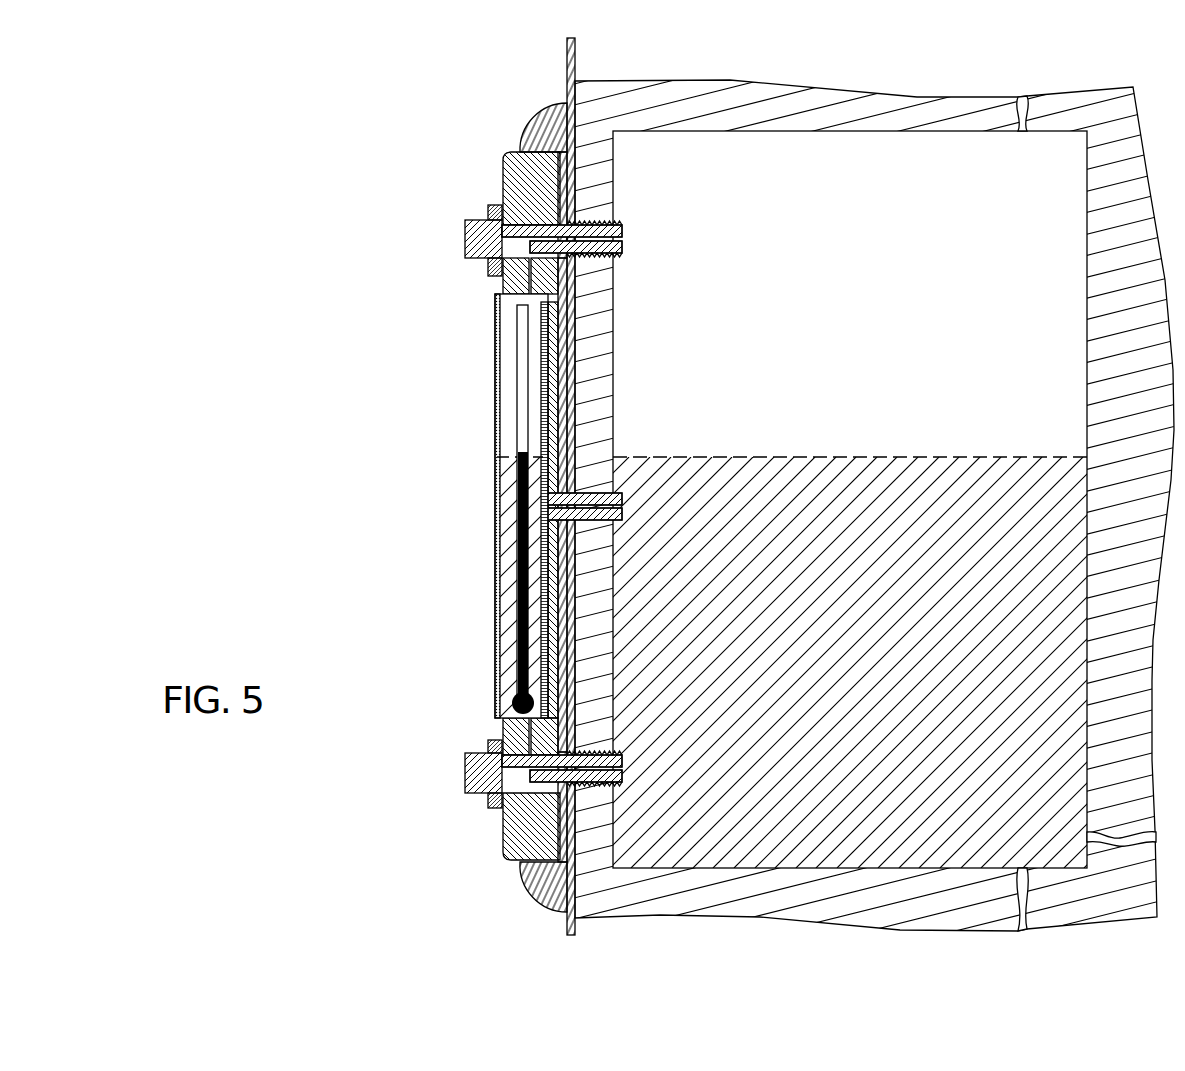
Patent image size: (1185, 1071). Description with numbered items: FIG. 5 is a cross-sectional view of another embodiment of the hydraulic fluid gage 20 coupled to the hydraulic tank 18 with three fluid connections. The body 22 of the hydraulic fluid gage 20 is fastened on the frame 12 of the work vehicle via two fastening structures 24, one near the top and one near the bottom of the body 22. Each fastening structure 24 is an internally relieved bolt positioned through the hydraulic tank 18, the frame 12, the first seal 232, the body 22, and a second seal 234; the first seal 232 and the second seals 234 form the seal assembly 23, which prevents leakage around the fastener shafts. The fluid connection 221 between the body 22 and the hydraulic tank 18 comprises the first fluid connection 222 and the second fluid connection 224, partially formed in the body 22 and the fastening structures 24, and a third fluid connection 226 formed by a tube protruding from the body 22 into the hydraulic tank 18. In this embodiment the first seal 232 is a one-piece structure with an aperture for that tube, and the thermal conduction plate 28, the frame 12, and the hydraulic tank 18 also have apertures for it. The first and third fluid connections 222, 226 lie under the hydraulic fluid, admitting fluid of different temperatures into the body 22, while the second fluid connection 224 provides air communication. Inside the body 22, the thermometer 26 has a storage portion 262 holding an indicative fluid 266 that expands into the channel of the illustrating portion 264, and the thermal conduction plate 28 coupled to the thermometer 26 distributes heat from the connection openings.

The frame 12 is at (577, 53).
The hydraulic tank 18 is at (927, 86).
The hydraulic fluid gage 20 is at (461, 135).
The body 22 is at (499, 506).
The seal assembly 23 is at (458, 421).
The fastening structures 24 is at (432, 243).
The thermometer 26 is at (517, 518).
The thermal conduction plate 28 is at (538, 390).
The fluid connection 221 is at (543, 488).
The first fluid connection 222 is at (545, 775).
The second fluid connection 224 is at (550, 187).
The third fluid connection 226 is at (597, 507).
The first seal 232 is at (550, 120).
The second seals 234 is at (498, 202).
The storage portion 262 is at (513, 697).
The illustrating portion 264 is at (517, 435).
The indicative fluid 266 is at (497, 582).